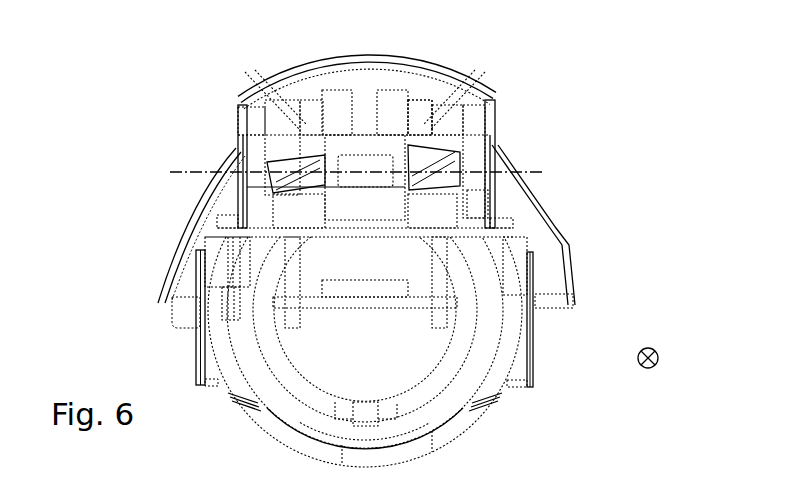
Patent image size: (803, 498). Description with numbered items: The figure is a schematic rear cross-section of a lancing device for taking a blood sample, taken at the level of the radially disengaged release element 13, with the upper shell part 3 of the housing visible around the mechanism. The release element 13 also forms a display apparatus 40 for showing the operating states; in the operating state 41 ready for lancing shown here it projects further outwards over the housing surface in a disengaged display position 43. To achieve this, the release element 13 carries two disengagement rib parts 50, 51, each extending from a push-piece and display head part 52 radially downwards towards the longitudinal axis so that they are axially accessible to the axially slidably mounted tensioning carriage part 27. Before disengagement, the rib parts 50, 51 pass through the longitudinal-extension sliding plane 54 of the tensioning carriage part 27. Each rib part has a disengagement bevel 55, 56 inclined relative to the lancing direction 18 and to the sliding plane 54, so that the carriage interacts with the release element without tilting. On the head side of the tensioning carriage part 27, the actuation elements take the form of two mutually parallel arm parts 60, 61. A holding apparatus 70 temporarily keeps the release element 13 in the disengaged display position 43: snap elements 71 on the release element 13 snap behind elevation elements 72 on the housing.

The upper shell part 3 is at (170, 263).
The release element 13 is at (242, 104).
The lancing direction 18 is at (658, 357).
The tensioning carriage part 27 is at (276, 433).
The display apparatus 40 is at (234, 126).
The operating state ready for lancing 41 is at (598, 57).
The disengaged display position 43 is at (588, 113).
The disengagement rib part 50 is at (310, 120).
The disengagement rib part 51 is at (420, 115).
The push-piece and display head part 52 is at (497, 99).
The longitudinal-extension sliding plane 54 is at (543, 168).
The disengagement bevel 55 is at (303, 150).
The disengagement bevel 56 is at (423, 150).
The arm part 60 is at (453, 175).
The arm part 61 is at (287, 172).
The holding apparatus 70 is at (576, 227).
The snap element 71 is at (243, 200).
The elevation element 72 is at (485, 228).